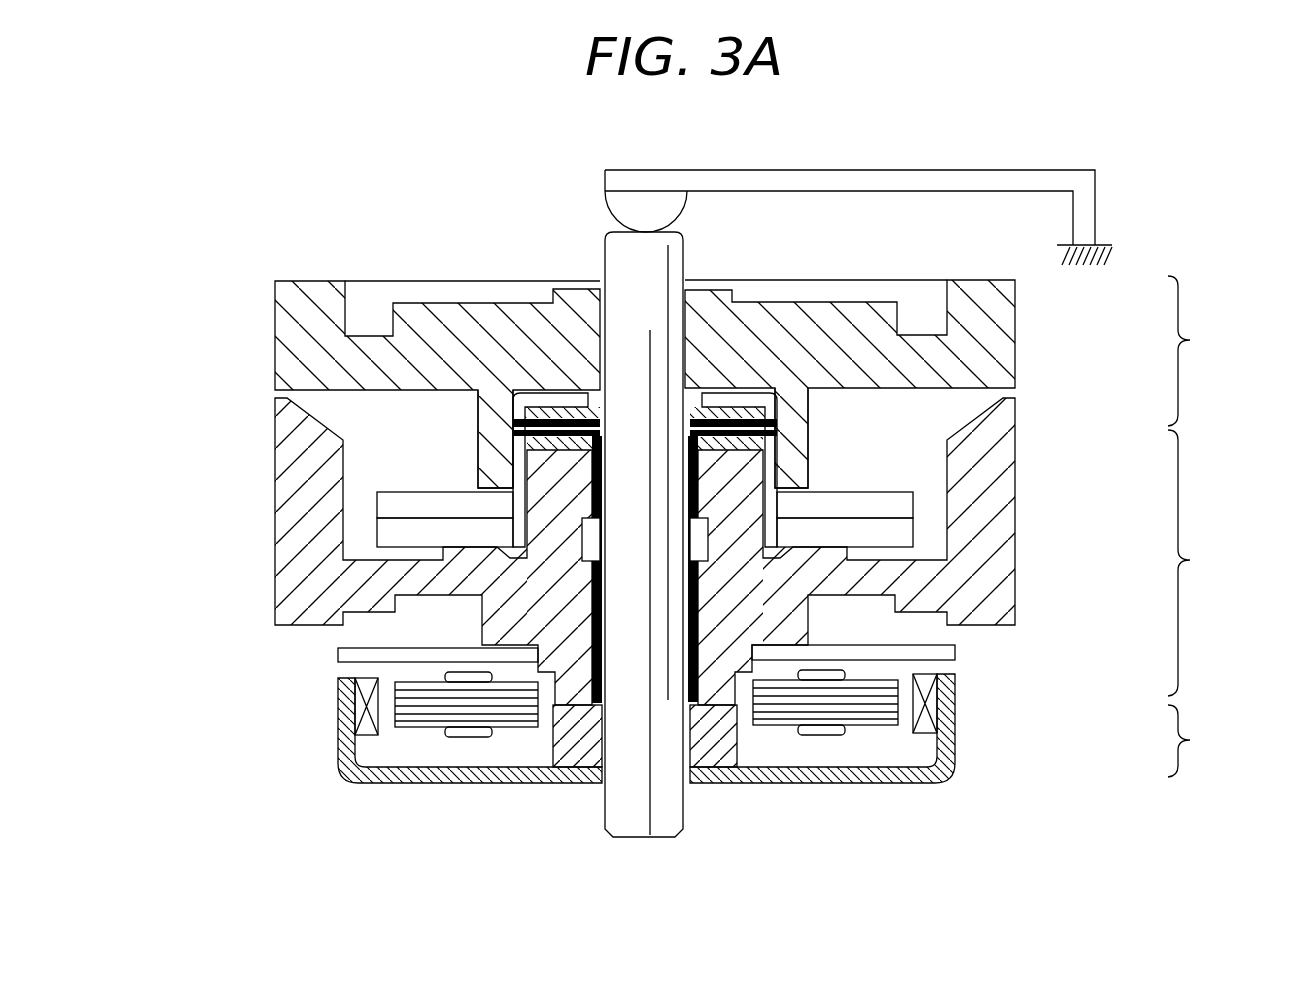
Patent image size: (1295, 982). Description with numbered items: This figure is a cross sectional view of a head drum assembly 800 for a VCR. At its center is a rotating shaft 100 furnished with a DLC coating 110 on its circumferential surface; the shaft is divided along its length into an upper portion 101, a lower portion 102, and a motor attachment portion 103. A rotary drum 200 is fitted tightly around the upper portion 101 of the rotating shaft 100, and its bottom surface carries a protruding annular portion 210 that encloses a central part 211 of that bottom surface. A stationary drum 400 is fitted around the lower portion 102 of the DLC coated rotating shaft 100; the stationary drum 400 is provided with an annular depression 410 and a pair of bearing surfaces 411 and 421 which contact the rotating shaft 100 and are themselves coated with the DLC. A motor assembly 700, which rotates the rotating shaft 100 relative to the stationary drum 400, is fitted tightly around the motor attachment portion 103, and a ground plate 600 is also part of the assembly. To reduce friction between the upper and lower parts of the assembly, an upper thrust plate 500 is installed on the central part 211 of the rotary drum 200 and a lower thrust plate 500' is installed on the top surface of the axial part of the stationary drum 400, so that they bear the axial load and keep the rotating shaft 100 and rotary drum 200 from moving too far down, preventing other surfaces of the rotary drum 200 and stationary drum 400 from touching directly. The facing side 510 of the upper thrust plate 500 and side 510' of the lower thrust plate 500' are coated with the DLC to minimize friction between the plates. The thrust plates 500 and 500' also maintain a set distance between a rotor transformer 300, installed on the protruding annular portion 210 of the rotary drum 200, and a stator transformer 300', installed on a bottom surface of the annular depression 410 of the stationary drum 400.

The head drum assembly 800 is at (437, 138).
The rotating shaft 100 is at (625, 257).
The DLC coating 110 is at (622, 618).
The rotary drum 200 is at (1012, 352).
The protruding annular portion 210 is at (588, 470).
The central part 211 is at (515, 460).
The rotor transformer 300 is at (539, 483).
The stator transformer 300' is at (544, 525).
The stationary drum 400 is at (1010, 552).
The annular depression 410 is at (350, 558).
The bearing surface 411 is at (498, 457).
The bearing surface 421 is at (560, 692).
The upper thrust plate 500 is at (634, 369).
The lower thrust plate 500' is at (788, 390).
The side of upper thrust plate 510 is at (652, 333).
The side of lower thrust plate 510' is at (766, 315).
The ground plate 600 is at (792, 185).
The motor assembly 700 is at (323, 761).
The upper portion 101 is at (1215, 351).
The lower portion 102 is at (1215, 563).
The motor attachment portion 103 is at (1215, 741).